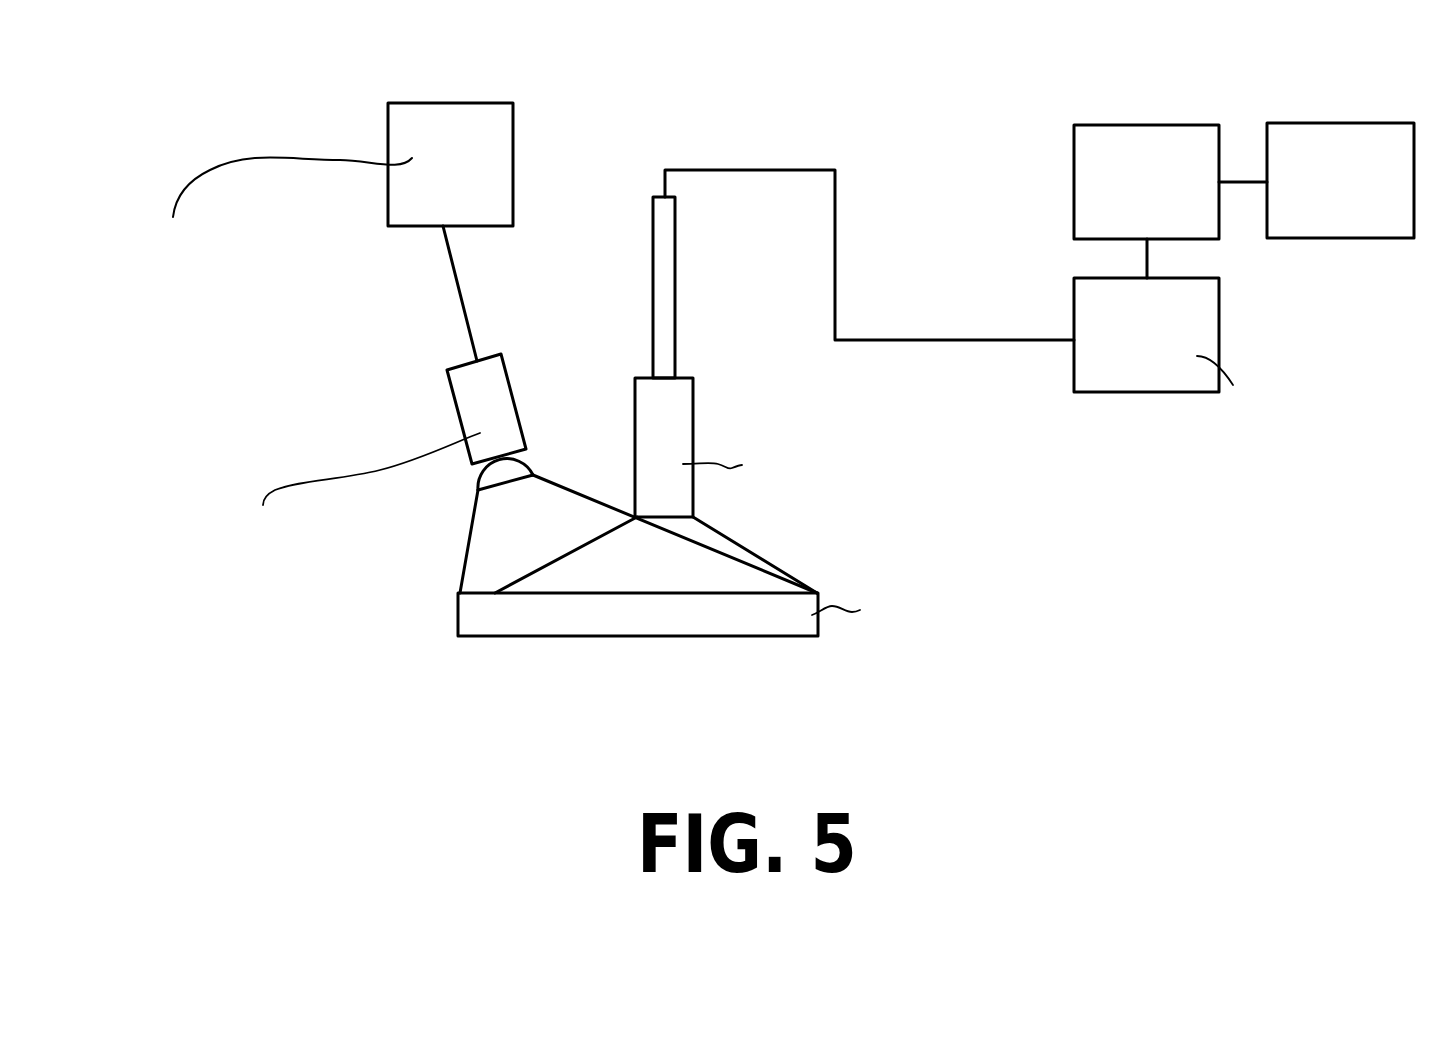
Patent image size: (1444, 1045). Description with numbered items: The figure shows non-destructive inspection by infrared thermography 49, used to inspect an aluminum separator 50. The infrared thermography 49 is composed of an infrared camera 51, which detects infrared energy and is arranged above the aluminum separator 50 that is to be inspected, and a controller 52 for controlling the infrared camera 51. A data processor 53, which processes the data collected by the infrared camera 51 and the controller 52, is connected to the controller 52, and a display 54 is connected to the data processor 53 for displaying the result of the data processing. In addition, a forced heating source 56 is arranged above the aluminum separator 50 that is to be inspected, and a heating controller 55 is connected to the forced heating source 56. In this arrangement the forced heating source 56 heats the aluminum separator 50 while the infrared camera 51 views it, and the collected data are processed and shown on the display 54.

The infrared thermography 49 is at (815, 67).
The aluminum separator 50 is at (668, 620).
The infrared camera 51 is at (683, 428).
The controller 52 is at (1145, 392).
The data processor 53 is at (1148, 125).
The display 54 is at (1355, 238).
The heating controller 55 is at (514, 122).
The forced heating source 56 is at (462, 390).